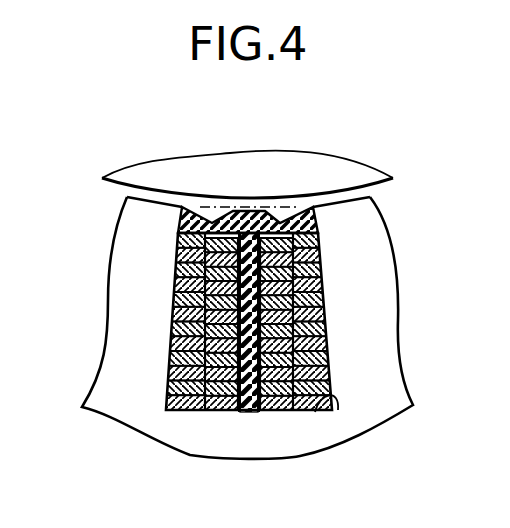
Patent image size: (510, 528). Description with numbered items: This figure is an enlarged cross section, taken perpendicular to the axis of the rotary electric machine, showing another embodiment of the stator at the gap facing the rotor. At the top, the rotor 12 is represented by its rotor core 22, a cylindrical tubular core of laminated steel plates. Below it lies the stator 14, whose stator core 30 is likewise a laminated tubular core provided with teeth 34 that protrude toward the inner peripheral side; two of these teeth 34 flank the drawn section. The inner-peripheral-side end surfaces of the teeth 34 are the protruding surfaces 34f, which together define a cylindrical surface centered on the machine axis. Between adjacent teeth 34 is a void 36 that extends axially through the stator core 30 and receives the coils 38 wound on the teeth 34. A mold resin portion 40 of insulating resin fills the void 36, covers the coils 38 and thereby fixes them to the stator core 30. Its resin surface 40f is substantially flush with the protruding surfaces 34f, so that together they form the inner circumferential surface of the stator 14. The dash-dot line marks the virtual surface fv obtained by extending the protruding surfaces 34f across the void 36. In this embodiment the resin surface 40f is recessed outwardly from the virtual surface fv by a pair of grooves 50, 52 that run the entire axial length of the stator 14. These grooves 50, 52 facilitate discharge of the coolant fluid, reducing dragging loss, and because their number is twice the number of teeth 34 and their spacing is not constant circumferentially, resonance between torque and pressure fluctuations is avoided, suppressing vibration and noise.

The rotor 12 is at (127, 147).
The stator 14 is at (390, 438).
The rotor core 22 is at (163, 172).
The stator core 30 is at (188, 440).
The teeth 34 is at (143, 278).
The protruding surfaces 34f is at (123, 189).
The voids 36 is at (325, 392).
The coils 38 is at (185, 345).
The mold resin portions 40 is at (247, 378).
The resin surface 40f is at (315, 210).
The groove 50 is at (212, 222).
The groove 52 is at (280, 222).
The virtual surface fv is at (237, 207).